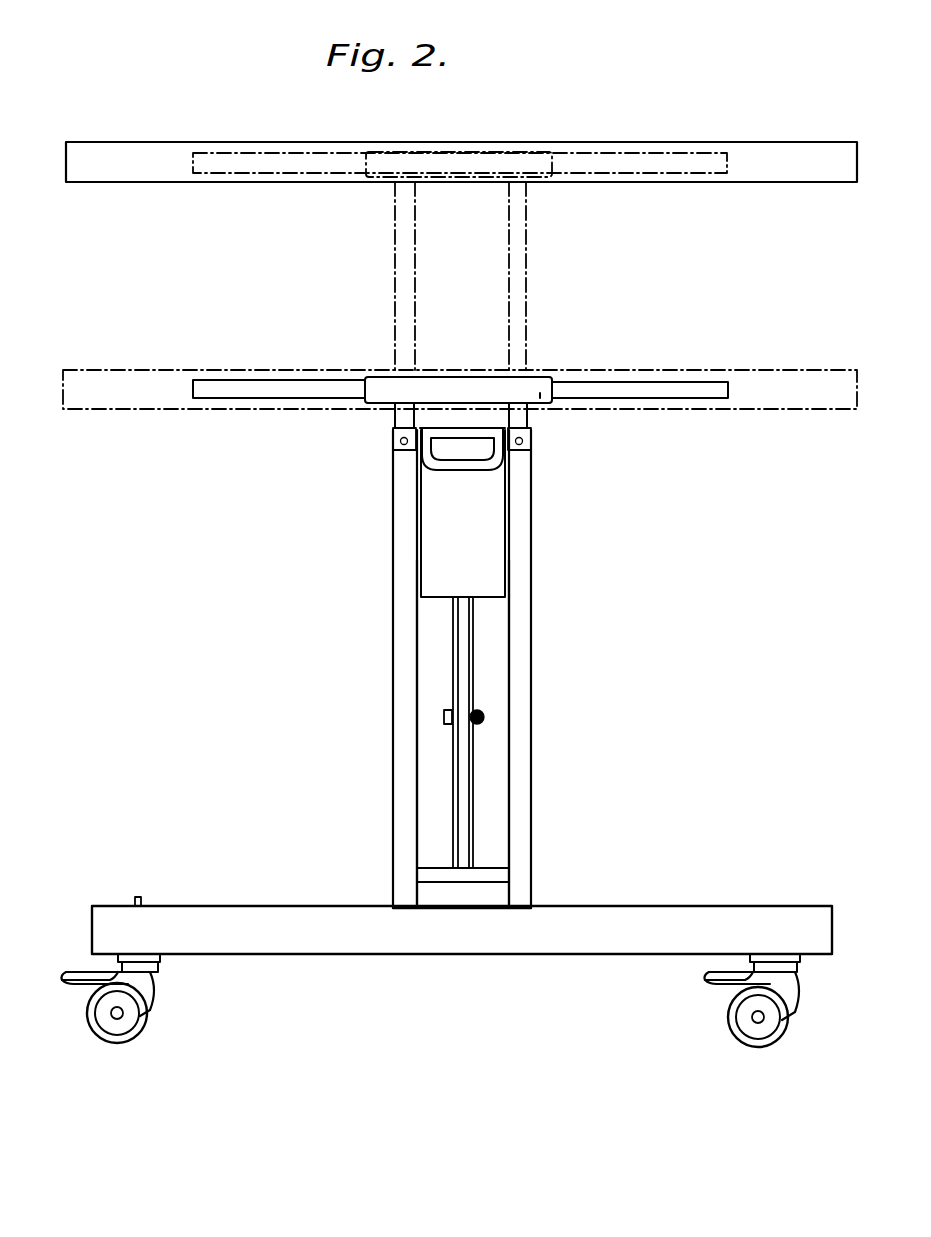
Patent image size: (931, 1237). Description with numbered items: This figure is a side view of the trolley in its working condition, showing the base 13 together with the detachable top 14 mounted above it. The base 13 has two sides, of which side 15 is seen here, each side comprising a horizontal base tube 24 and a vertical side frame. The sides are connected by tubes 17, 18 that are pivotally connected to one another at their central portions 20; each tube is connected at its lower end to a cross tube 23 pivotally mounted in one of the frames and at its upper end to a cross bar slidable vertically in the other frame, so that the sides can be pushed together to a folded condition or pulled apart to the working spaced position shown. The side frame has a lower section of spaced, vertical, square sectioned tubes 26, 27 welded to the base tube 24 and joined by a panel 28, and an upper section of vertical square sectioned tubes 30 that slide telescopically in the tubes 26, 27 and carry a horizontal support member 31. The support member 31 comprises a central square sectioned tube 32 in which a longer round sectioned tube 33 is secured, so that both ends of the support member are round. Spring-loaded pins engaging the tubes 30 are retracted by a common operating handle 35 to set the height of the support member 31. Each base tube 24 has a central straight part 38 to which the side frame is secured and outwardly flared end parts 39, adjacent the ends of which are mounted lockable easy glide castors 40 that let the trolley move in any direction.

The base 13 is at (392, 757).
The detachable top 14 is at (160, 157).
The side 15 is at (398, 570).
The tube 17 is at (458, 635).
The tube 18 is at (488, 730).
The central portion 20 is at (475, 712).
The cross tube 23 is at (495, 878).
The horizontal base tube 24 is at (300, 943).
The vertical square sectioned tube 26 is at (398, 838).
The vertical square sectioned tube 27 is at (518, 818).
The panel 28 is at (485, 537).
The vertical square sectioned tube 30 is at (510, 287).
The horizontal support member 31 is at (395, 152).
The central rectangular sectioned tube 32 is at (540, 395).
The round sectioned tube 33 is at (678, 385).
The operating handle 35 is at (455, 475).
The central straight part 38 is at (463, 942).
The outwardly flared end part 39 is at (173, 912).
The castor 40 is at (127, 1000).